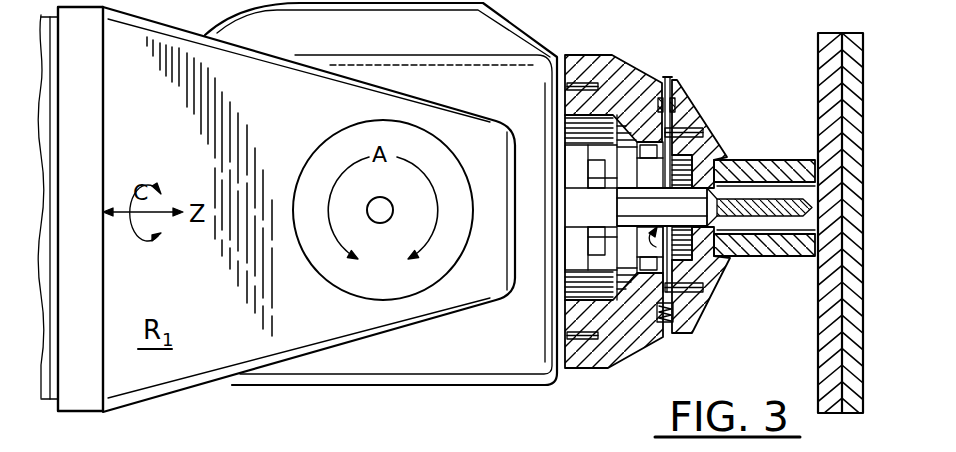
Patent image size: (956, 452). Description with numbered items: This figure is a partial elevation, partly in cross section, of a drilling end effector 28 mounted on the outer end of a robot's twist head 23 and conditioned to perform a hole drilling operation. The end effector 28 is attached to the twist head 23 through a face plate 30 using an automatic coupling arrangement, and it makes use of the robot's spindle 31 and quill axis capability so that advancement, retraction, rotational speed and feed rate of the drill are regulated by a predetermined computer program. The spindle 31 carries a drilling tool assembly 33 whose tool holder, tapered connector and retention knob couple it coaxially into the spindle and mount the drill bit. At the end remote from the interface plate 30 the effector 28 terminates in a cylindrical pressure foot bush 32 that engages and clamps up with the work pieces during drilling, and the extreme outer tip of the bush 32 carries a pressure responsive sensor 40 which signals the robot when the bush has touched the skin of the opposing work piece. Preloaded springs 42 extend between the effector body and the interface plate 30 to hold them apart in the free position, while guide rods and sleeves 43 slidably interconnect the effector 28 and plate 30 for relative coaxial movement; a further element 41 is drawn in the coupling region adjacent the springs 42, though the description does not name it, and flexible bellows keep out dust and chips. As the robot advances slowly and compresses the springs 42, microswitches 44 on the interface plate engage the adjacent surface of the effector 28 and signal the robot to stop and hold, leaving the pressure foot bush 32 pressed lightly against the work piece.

The twist head 23 is at (352, 388).
The drilling end effector 28 is at (716, 113).
The face plate 30 is at (634, 360).
The spindle 31 is at (598, 157).
The pressure foot bush 32 is at (768, 262).
The drilling tool assembly 33 is at (700, 191).
The pressure responsive sensor 40 is at (810, 260).
The pin 41 is at (672, 72).
The preloaded springs 42 is at (681, 100).
The guide rods and sleeves 43 is at (693, 301).
The microswitches 44 is at (652, 272).